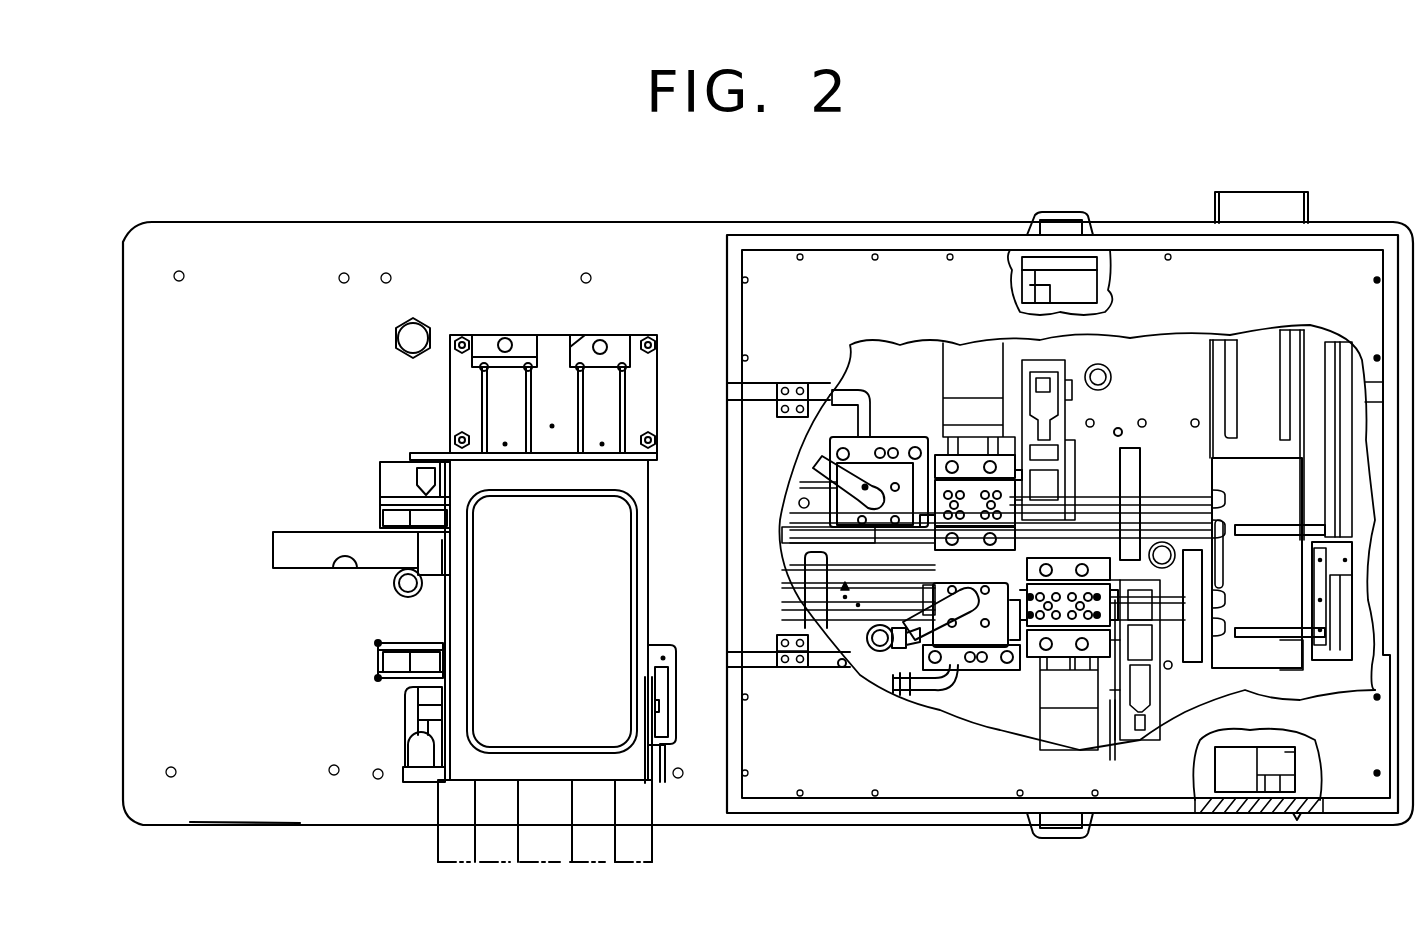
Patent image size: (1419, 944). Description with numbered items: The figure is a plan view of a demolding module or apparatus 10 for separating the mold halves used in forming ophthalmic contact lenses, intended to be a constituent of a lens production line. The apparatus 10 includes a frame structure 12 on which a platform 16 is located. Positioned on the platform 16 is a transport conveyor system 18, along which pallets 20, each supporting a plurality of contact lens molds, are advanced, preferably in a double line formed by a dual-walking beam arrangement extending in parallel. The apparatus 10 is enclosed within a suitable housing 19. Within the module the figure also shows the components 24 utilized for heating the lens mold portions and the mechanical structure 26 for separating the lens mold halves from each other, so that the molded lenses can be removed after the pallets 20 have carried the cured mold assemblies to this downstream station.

The demolding module or apparatus 10 is at (1364, 210).
The frame structure 12 is at (394, 222).
The platform 16 is at (241, 815).
The transport conveyor system 18 is at (1120, 428).
The housing 19 is at (760, 812).
The pallets 20 is at (938, 455).
The components for heating the lens mold portions 24 is at (890, 437).
The mechanical structure for separating the lens mold halves 26 is at (1117, 710).